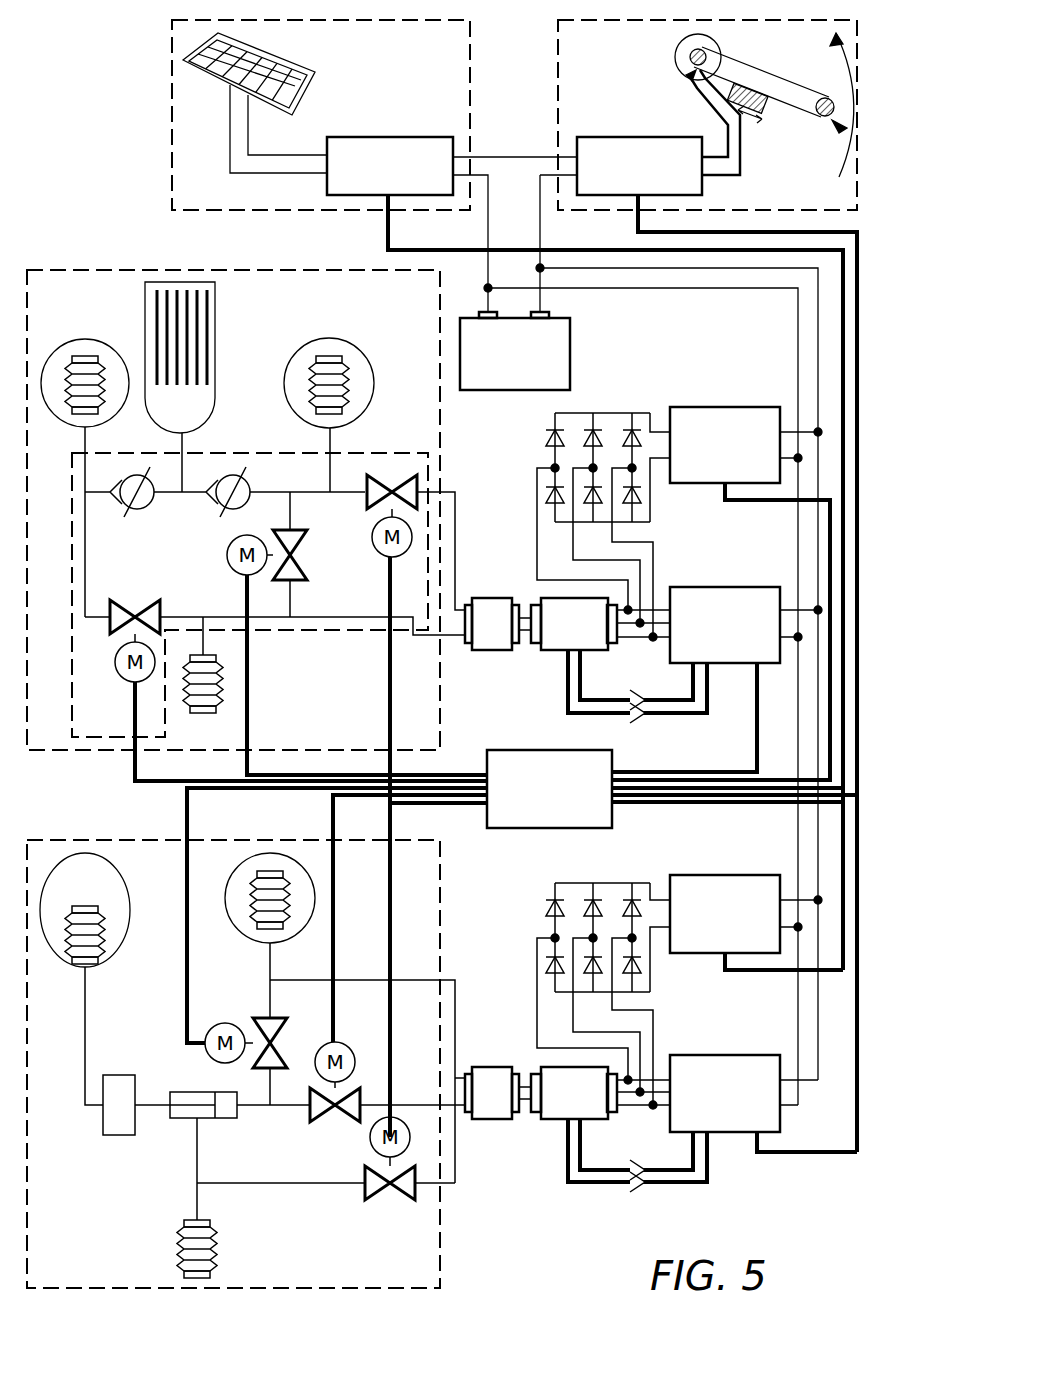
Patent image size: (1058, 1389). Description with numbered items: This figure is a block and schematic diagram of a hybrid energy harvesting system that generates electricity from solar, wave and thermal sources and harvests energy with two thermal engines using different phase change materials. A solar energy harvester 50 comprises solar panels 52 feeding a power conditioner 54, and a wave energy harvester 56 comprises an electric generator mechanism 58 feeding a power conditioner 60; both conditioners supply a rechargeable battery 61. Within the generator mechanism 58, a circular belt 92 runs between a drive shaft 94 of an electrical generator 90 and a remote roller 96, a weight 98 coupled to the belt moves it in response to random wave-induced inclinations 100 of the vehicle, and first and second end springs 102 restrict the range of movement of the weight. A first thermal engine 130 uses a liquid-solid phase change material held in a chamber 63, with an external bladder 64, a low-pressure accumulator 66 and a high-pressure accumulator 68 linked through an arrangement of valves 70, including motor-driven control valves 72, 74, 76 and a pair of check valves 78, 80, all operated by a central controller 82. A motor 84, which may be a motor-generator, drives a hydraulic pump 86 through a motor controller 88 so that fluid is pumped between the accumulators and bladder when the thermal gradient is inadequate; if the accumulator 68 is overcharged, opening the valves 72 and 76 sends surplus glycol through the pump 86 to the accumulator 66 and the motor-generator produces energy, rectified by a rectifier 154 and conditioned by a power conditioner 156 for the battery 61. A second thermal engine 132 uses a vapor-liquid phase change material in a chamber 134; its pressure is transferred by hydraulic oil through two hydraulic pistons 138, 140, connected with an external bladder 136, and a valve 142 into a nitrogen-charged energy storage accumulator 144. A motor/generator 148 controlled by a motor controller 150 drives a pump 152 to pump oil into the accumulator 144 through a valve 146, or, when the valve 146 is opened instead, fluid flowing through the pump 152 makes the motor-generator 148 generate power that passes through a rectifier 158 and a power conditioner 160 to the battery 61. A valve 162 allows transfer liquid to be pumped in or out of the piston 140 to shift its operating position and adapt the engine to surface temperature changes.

The solar energy harvester 50 is at (172, 86).
The solar panels 52 is at (302, 62).
The power conditioner 54 is at (383, 137).
The wave energy harvester 56 is at (558, 88).
The electric generator mechanism 58 is at (715, 116).
The power conditioner 60 is at (577, 147).
The rechargeable battery 61 is at (570, 350).
The chamber 63 is at (218, 297).
The external bladder 64 is at (222, 672).
The low-pressure accumulator/internal bladder 66 is at (108, 348).
The high-pressure accumulator 68 is at (355, 350).
The arrangement of valves 70 is at (108, 742).
The control valve 72 is at (135, 600).
The control valve 74 is at (312, 560).
The control valve 76 is at (392, 475).
The check valve 78 is at (152, 505).
The check valve 80 is at (245, 475).
The central controller 82 is at (525, 750).
The motor 84 is at (555, 650).
The hydraulic pump 86 is at (490, 598).
The motor controller 88 is at (722, 587).
The electrical generator 90 is at (720, 50).
The circular belt 92 is at (775, 78).
The drive shaft 94 is at (698, 55).
The roller 96 is at (826, 97).
The weight 98 is at (775, 110).
The wave-induced inclinations 100 is at (839, 118).
The end springs 102 is at (688, 72).
The first thermal engine 130 is at (88, 268).
The second thermal engine 132 is at (440, 1228).
The chamber 134 is at (98, 968).
The external bladder 136 is at (222, 1238).
The hydraulic piston 138 is at (118, 1136).
The hydraulic piston 140 is at (180, 1118).
The valve 142 is at (262, 1018).
The energy storage accumulator 144 is at (258, 945).
The valve 146 is at (330, 1122).
The motor/generator 148 is at (555, 1119).
The motor controller 150 is at (722, 1055).
The pump 152 is at (490, 1067).
The rectifier 154 is at (529, 448).
The power conditioner 156 is at (728, 407).
The rectifier 158 is at (529, 916).
The power conditioner 160 is at (728, 875).
The valve 162 is at (385, 1200).